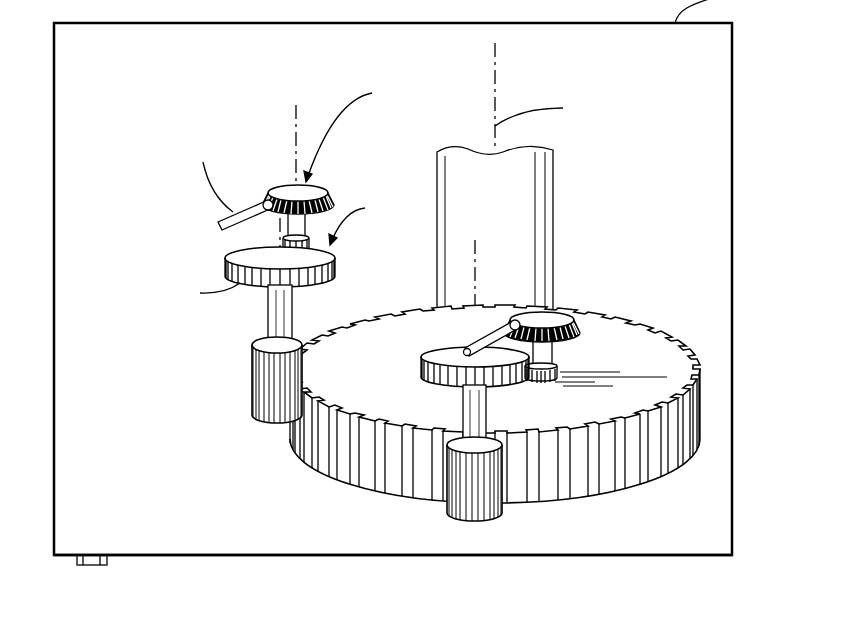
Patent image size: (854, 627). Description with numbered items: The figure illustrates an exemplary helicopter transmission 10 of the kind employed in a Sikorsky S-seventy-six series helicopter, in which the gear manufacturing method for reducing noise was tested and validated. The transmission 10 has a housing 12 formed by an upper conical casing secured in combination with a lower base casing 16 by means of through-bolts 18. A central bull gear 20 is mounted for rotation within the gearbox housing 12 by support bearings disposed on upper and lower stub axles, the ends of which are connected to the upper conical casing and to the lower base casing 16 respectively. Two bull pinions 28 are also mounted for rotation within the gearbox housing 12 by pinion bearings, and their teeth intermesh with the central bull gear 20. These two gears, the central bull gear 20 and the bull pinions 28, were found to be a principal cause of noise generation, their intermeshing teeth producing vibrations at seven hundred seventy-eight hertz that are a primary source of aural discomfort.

The transmission 10 is at (45, 340).
The housing 12 is at (733, 190).
The lower base casing 16 is at (153, 556).
The through-bolts 18 is at (90, 568).
The central bull gear 20 is at (625, 323).
The bull pinions 28 is at (447, 515).